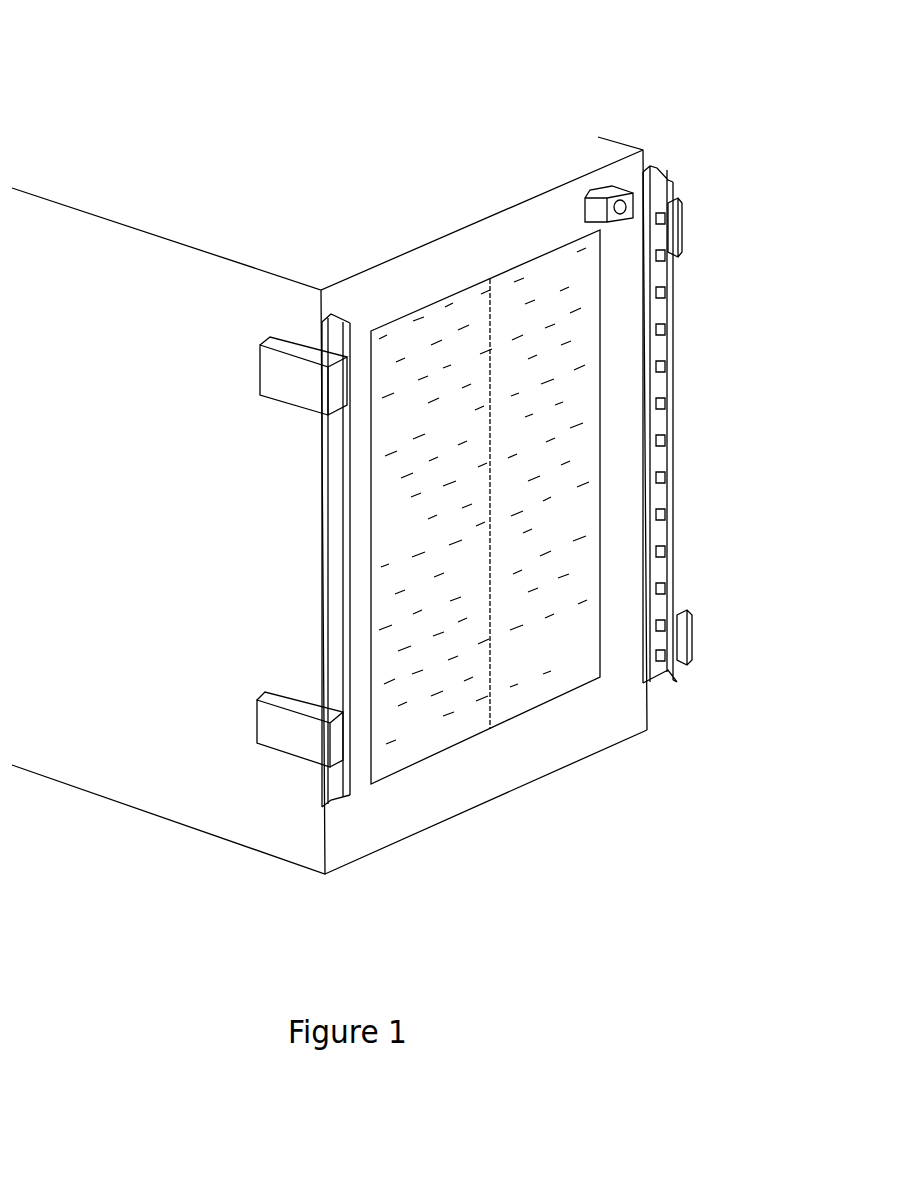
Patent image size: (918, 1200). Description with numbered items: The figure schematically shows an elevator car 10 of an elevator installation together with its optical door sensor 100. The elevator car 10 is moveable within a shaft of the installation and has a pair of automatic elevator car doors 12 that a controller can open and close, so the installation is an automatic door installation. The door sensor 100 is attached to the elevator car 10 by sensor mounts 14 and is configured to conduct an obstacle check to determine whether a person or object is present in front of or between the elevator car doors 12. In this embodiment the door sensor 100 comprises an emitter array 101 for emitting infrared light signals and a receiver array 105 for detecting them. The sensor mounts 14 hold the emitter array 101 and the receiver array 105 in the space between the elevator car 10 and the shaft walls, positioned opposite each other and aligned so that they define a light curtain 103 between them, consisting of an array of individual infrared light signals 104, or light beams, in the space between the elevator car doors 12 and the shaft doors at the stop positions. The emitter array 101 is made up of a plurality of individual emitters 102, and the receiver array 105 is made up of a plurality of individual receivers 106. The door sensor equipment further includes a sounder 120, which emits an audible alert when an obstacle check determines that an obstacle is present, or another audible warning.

The elevator car 10 is at (62, 62).
The automatic elevator car doors 12 is at (537, 280).
The sensor mounts 14 is at (296, 378).
The door sensor 100 is at (685, 180).
The emitter array 101 is at (340, 546).
The individual emitters 102 is at (360, 630).
The light curtain 103 is at (524, 663).
The individual infrared light signals 104 is at (567, 665).
The receiver array 105 is at (667, 392).
The individual receivers 106 is at (667, 412).
The sounder 120 is at (617, 183).